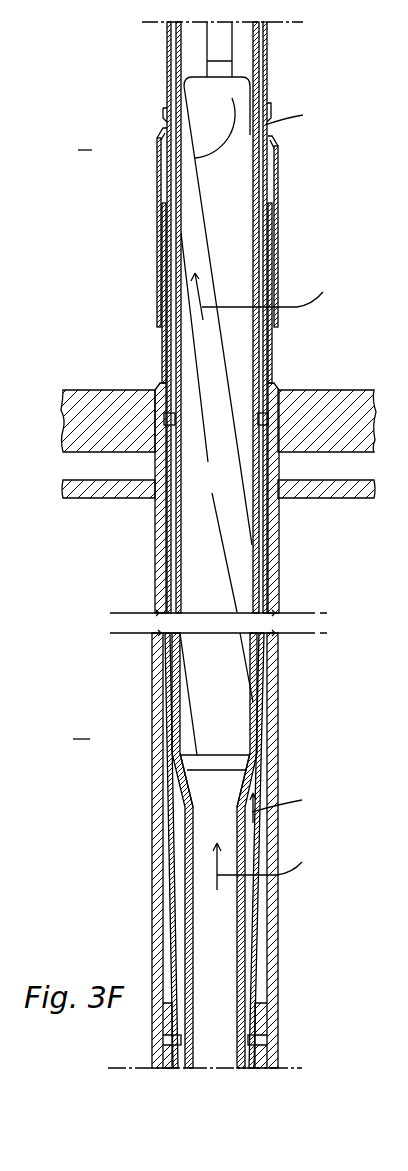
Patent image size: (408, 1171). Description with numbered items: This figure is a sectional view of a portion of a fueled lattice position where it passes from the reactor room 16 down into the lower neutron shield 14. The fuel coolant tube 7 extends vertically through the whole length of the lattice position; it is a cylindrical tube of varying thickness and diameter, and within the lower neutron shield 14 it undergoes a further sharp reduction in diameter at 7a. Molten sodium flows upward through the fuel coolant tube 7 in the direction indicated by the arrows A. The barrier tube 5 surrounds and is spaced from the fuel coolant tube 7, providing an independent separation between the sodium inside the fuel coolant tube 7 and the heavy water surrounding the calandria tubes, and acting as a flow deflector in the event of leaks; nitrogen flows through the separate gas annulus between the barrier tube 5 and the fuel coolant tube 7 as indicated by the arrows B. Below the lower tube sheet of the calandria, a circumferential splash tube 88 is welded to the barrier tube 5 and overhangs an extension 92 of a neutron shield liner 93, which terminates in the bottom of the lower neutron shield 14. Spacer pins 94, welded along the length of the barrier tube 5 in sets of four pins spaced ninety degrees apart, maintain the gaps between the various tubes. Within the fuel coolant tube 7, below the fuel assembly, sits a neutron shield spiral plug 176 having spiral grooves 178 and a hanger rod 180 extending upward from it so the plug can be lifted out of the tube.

The hanger rod 180 is at (233, 43).
The neutron shield spiral plug 176 is at (245, 75).
The spiral grooves 178 is at (216, 420).
The fuel coolant tube 7 is at (260, 58).
The sharp reduction in diameter 7a is at (252, 778).
The barrier tube 5 is at (267, 90).
The splash tube 88 is at (278, 160).
The extension 92 is at (273, 340).
The neutron shield liner 93 is at (275, 383).
The spacer pins 94 is at (252, 428).
The arrows A is at (262, 581).
The arrows B is at (283, 465).
The reactor room 16 is at (82, 126).
The lower neutron shield 14 is at (79, 706).